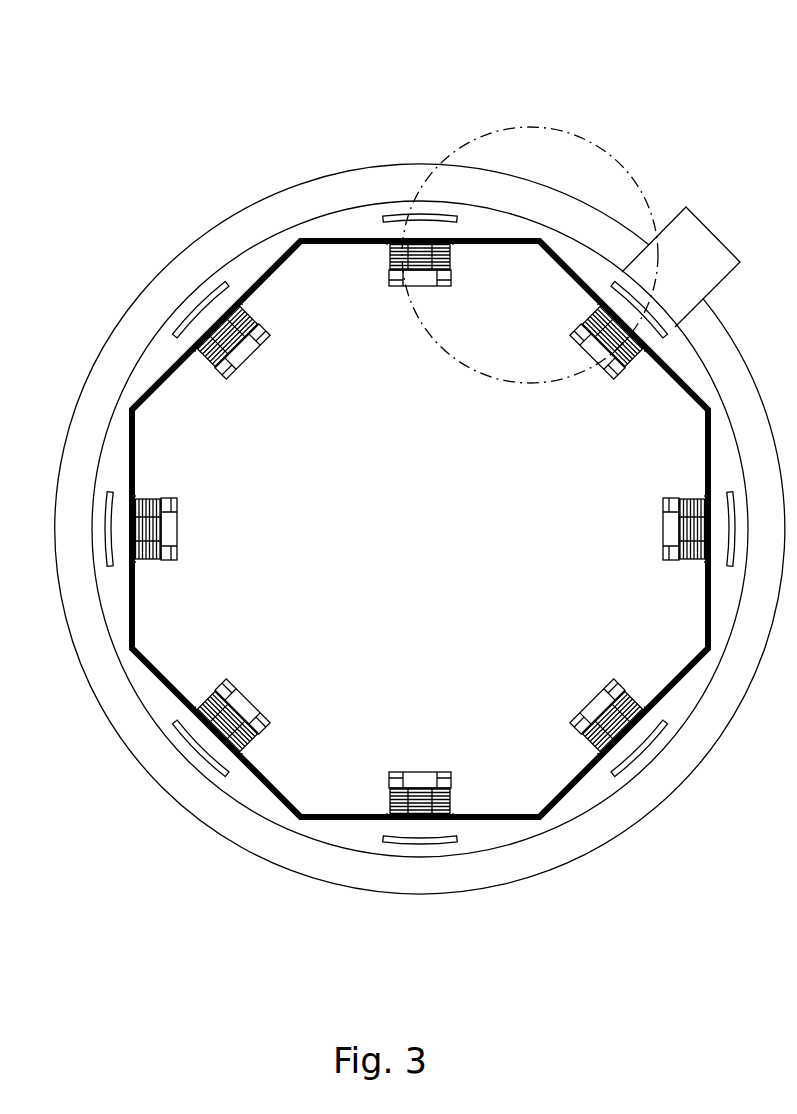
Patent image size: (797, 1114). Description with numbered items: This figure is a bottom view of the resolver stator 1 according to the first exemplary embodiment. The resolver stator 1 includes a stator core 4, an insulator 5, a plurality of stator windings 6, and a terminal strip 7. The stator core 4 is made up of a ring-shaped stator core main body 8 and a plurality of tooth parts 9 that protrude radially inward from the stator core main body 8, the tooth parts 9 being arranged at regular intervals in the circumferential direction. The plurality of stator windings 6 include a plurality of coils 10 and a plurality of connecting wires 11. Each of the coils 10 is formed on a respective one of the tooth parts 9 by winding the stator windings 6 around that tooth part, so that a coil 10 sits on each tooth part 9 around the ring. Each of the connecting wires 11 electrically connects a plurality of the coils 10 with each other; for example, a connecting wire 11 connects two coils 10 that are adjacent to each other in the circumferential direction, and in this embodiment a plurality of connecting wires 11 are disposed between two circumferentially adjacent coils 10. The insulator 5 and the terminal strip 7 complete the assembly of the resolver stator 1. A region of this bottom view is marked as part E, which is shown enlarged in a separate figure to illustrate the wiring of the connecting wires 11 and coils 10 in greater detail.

The resolver stator 1 is at (68, 130).
The stator core 4 is at (493, 878).
The insulator 5 is at (357, 835).
The stator windings 6 is at (170, 690).
The terminal strip 7 is at (703, 242).
The stator core main body 8 is at (267, 845).
The tooth parts 9 is at (422, 288).
The coils 10 is at (403, 284).
The connecting wires 11 is at (336, 246).
The part E is at (543, 128).